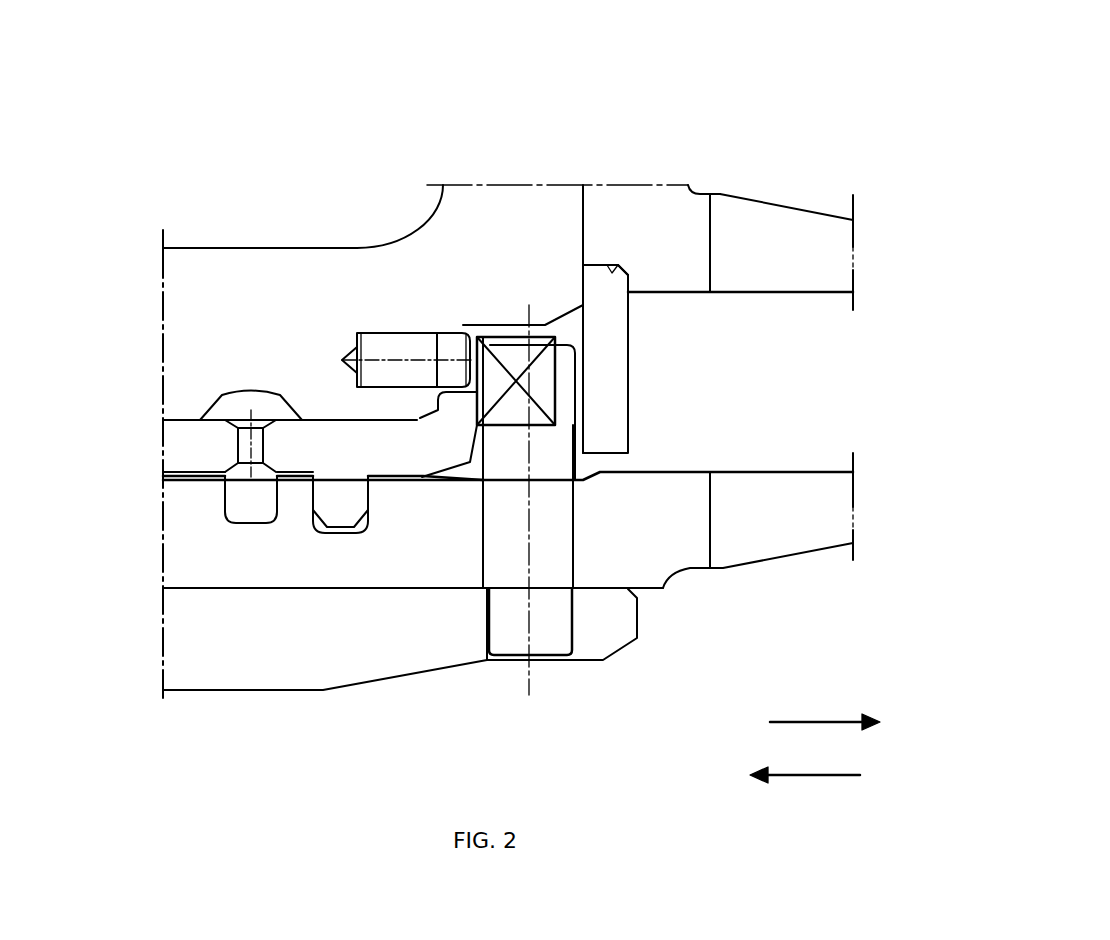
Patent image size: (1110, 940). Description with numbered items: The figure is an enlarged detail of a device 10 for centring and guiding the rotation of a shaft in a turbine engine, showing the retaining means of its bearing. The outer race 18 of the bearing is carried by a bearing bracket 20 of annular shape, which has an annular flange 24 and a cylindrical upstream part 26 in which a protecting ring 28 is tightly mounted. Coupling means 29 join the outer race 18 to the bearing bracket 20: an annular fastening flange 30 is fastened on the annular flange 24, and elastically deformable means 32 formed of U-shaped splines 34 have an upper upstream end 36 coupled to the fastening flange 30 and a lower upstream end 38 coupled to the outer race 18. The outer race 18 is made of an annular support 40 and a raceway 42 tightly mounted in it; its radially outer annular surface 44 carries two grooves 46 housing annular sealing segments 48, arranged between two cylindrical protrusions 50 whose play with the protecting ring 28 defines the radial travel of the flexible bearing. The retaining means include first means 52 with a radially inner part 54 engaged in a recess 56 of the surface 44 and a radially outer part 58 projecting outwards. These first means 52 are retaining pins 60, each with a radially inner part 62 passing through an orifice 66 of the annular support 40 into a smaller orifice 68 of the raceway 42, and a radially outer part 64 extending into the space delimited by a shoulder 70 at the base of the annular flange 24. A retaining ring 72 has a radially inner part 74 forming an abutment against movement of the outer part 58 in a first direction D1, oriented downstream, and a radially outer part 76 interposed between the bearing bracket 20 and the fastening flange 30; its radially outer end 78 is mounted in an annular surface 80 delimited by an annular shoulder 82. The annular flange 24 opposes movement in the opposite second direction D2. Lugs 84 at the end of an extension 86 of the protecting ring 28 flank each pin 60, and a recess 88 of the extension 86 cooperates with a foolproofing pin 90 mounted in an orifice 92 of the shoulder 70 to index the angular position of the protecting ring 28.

The device 10 is at (300, 95).
The outer race 18 is at (102, 558).
The bearing bracket 20 is at (355, 248).
The annular flange 24 is at (552, 198).
The upstream part 26 is at (230, 260).
The protecting ring 28 is at (183, 428).
The coupling means 29 is at (790, 92).
The annular fastening flange 30 is at (690, 190).
The elastically deformable means 32 is at (786, 199).
The splines 34 is at (817, 204).
The upper upstream end 36 is at (660, 195).
The lower upstream end 38 is at (707, 490).
The annular support 40 is at (183, 552).
The raceway 42 is at (183, 641).
The radially outer annular surface 44 is at (183, 470).
The grooves 46 is at (338, 530).
The annular sealing segments 48 is at (357, 492).
The cylindrical protrusions 50 is at (397, 472).
The first means 52 is at (508, 500).
The radially inner part 54 is at (669, 524).
The recess 56 is at (415, 702).
The radially outer part 58 is at (605, 412).
The retaining pins 60 is at (473, 518).
The radially inner part 62 is at (563, 533).
The radially outer part 64 is at (558, 452).
The orifice 66 is at (490, 618).
The orifice 68 is at (505, 640).
The shoulder 70 is at (447, 380).
The retaining ring 72 is at (641, 359).
The radially inner part 74 is at (628, 360).
The radially outer part 76 is at (612, 277).
The radially outer end 78 is at (604, 207).
The annular surface 80 is at (597, 263).
The annular shoulder 82 is at (615, 290).
The lugs 84 is at (515, 337).
The extension 86 is at (455, 400).
The recess 88 is at (455, 345).
The foolproofing pin 90 is at (417, 330).
The orifice 92 is at (380, 347).
The first direction D1 is at (818, 715).
The second direction D2 is at (815, 800).